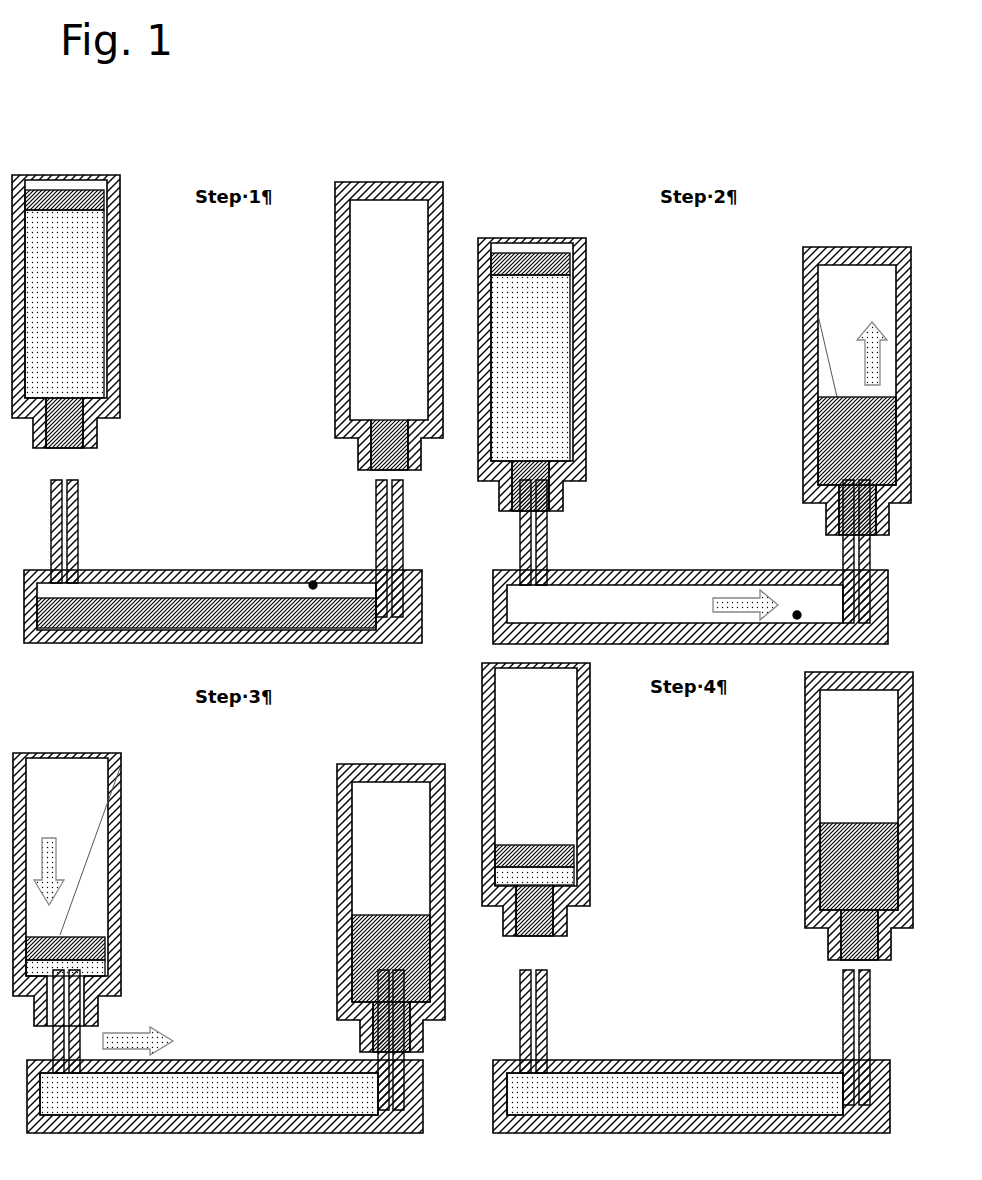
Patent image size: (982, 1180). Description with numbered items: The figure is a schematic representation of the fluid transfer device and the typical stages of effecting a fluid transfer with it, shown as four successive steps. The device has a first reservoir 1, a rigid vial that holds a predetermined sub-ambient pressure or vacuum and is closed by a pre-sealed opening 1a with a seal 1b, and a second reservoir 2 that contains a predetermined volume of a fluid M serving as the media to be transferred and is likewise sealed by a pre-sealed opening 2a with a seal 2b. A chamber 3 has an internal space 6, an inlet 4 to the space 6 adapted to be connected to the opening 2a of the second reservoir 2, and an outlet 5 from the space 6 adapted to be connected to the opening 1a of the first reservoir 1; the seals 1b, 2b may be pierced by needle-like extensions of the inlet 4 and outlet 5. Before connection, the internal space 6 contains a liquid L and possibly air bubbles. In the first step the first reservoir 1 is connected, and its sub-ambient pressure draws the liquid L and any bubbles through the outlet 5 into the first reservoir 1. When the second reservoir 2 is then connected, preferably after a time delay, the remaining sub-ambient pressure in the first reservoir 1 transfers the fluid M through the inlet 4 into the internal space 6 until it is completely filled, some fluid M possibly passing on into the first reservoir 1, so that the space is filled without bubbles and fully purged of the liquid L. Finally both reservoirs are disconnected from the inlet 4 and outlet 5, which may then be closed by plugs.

The first reservoir 1 is at (397, 328).
The pre-sealed opening 1a is at (818, 315).
The seal 1b is at (387, 455).
The second reservoir 2 is at (90, 289).
The pre-sealed opening 2a is at (120, 768).
The seal 2b is at (75, 425).
The chamber 3 is at (212, 562).
The inlet 4 is at (80, 497).
The outlet 5 is at (410, 520).
The internal space 6 is at (313, 585).
The liquid L is at (147, 607).
The fluid M is at (80, 342).